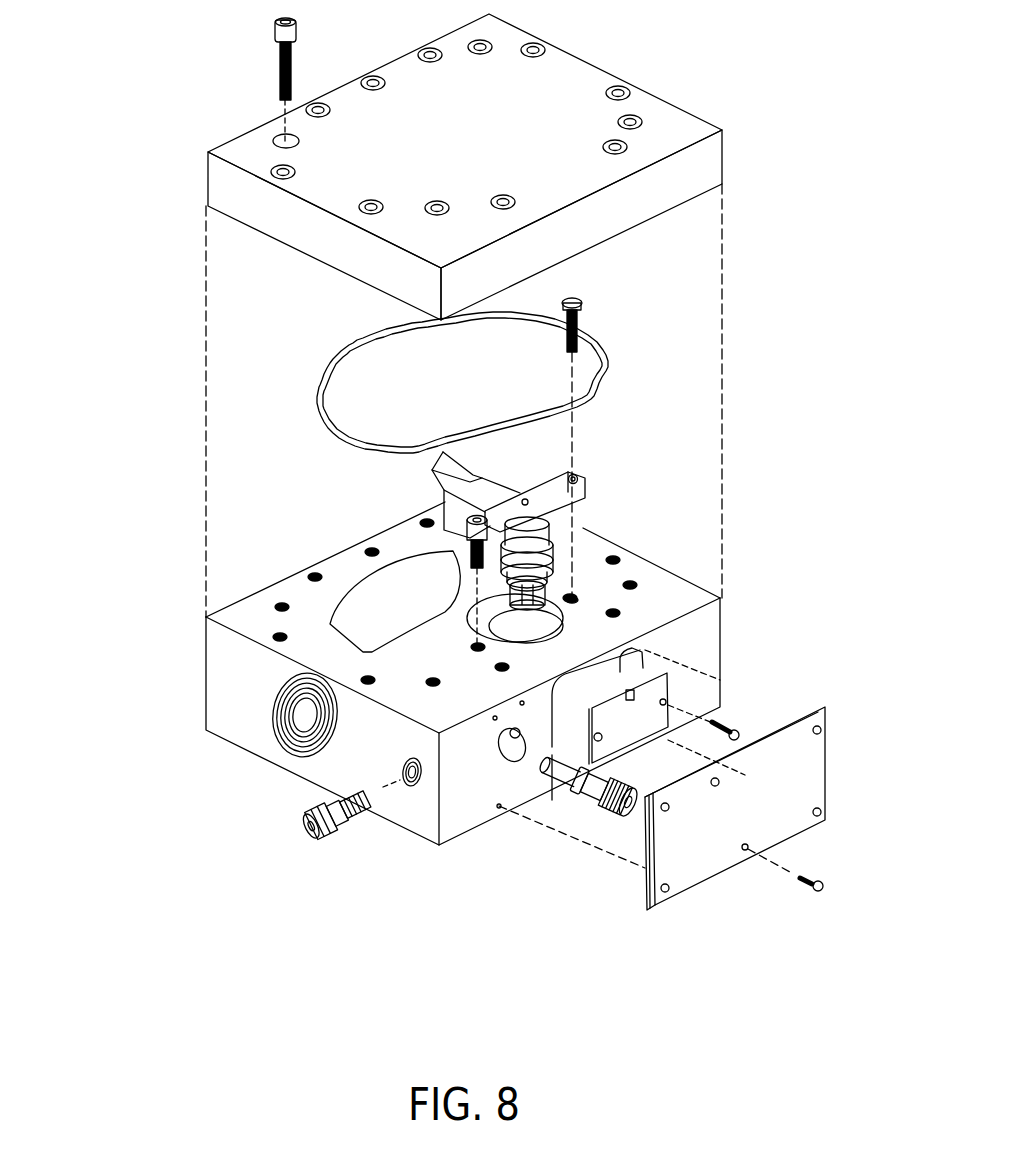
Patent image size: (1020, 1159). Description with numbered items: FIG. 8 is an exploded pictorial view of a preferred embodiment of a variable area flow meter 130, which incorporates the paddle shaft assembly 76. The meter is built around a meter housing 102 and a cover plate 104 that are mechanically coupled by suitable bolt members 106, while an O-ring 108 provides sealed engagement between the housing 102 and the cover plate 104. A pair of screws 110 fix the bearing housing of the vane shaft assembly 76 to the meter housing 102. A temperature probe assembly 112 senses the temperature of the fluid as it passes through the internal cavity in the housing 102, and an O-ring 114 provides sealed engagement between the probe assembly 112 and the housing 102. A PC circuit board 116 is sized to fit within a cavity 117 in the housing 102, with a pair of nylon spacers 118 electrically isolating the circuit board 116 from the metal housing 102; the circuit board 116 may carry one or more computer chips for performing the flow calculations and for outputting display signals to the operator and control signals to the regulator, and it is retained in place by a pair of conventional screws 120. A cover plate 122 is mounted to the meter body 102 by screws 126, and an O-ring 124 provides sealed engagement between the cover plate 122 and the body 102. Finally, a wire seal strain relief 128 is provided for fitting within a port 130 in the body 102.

The paddle shaft assembly 76 is at (432, 470).
The meter housing 102 is at (235, 735).
The cover plate 104 is at (208, 165).
The bolt members 106 is at (275, 26).
The O-ring 108 is at (318, 395).
The screws 110 is at (582, 301).
The temperature probe assembly 112 is at (627, 803).
The O-ring 114 is at (575, 778).
The PC circuit board 116 is at (662, 680).
The cavity 117 is at (620, 672).
The nylon spacers 118 is at (543, 759).
The screws 120 is at (737, 738).
The cover plate 122 is at (825, 705).
The O-ring 124 is at (647, 860).
The screws 126 is at (806, 887).
The wire seal strain relief 128 is at (300, 822).
The variable area flow meter 130 is at (407, 788).